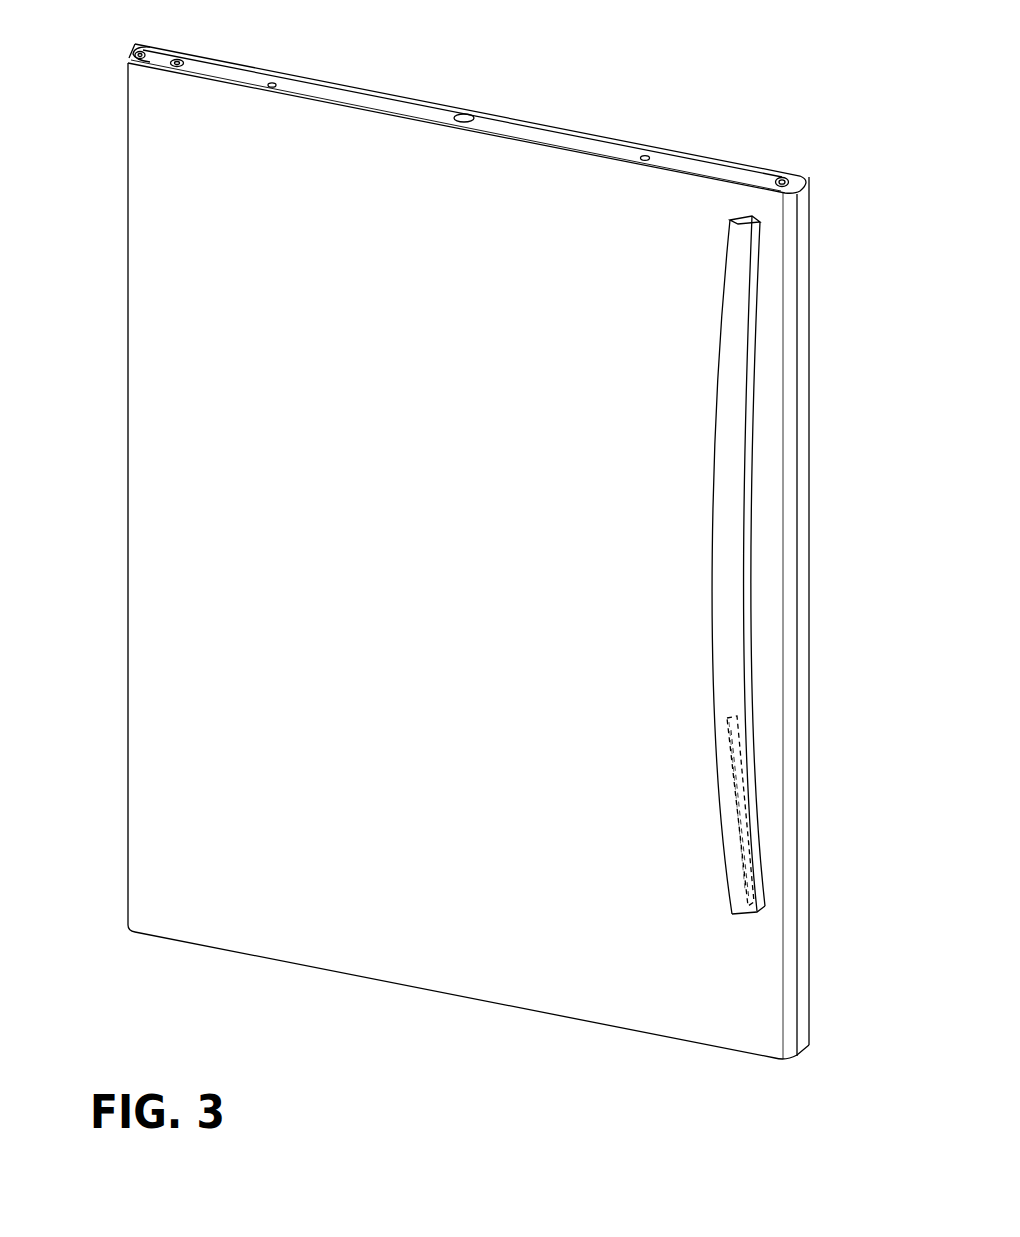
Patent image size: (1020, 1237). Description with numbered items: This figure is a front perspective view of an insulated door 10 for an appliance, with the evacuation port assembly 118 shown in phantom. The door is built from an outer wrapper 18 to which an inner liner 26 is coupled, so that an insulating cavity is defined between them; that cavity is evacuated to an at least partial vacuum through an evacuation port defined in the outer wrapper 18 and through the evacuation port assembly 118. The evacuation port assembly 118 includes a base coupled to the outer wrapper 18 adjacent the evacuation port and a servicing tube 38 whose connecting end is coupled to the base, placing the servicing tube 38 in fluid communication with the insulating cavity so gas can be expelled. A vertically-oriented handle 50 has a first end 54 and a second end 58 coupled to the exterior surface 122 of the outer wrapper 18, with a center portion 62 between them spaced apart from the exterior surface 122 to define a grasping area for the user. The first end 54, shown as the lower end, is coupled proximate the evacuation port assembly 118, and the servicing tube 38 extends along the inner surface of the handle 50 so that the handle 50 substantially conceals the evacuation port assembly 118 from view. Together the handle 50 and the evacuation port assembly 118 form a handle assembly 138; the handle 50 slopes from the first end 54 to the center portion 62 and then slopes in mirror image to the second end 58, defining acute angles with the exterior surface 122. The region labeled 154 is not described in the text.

The insulated door 10 is at (415, 531).
The outer wrapper 18 is at (174, 217).
The inner liner 26 is at (317, 78).
The servicing tube 38 is at (757, 835).
The handle 50 is at (818, 567).
The first end 54 is at (762, 907).
The second end 58 is at (757, 243).
The center portion 62 is at (722, 572).
The evacuation port assembly 118 is at (759, 795).
The exterior surface 122 is at (245, 714).
The handle assembly 138 is at (818, 567).
The hidden mounting recess 154 is at (769, 869).